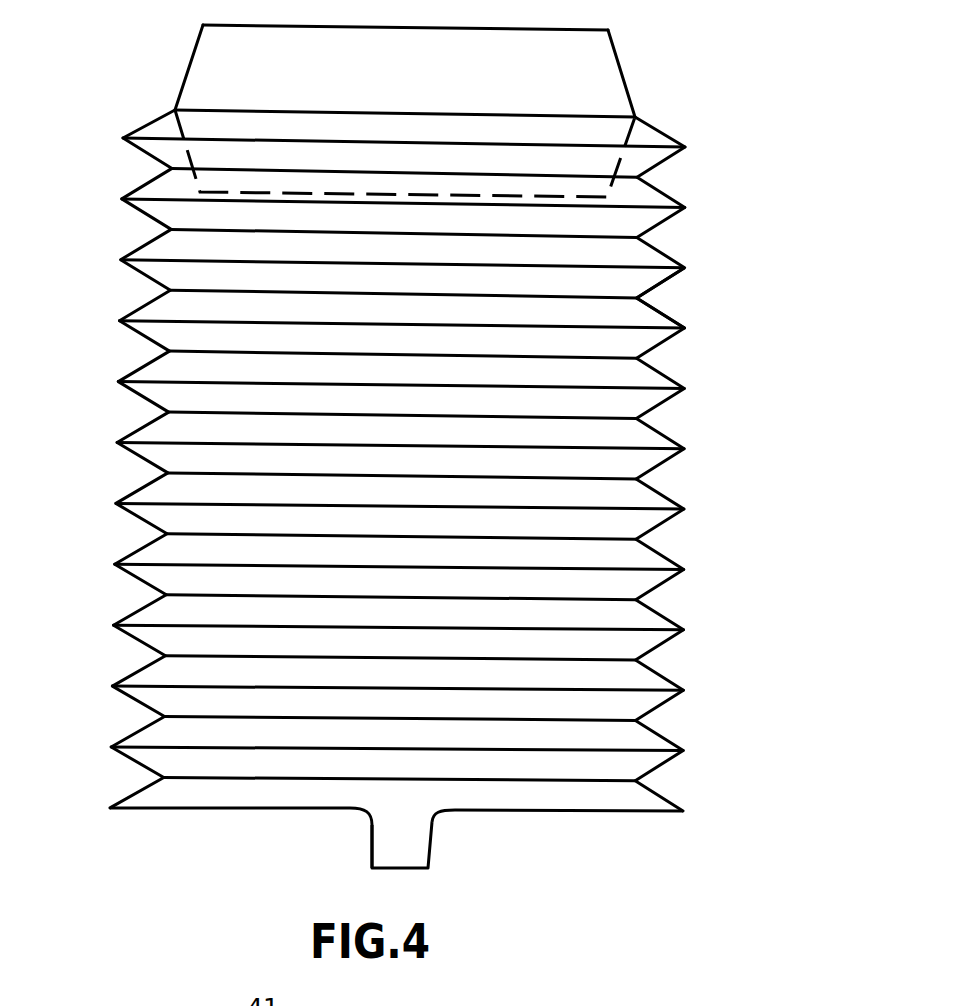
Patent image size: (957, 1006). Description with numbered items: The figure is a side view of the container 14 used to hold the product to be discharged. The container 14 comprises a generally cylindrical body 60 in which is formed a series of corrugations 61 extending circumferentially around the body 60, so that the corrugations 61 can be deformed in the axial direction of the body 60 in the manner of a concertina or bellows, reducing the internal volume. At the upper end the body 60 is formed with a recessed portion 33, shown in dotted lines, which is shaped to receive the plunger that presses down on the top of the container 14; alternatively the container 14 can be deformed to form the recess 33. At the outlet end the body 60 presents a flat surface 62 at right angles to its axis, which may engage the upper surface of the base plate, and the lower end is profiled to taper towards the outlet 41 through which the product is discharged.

The container 14 is at (457, 460).
The recess 33 is at (297, 195).
The outlet 41 is at (422, 832).
The body 60 is at (667, 247).
The corrugations 61 is at (665, 281).
The flat surface 62 is at (578, 812).